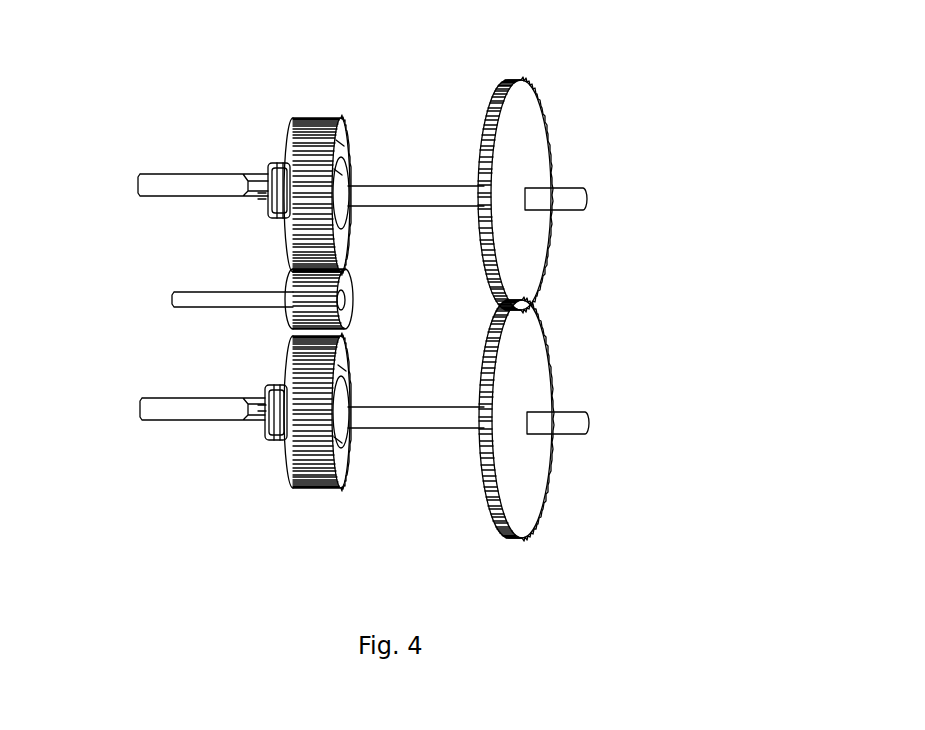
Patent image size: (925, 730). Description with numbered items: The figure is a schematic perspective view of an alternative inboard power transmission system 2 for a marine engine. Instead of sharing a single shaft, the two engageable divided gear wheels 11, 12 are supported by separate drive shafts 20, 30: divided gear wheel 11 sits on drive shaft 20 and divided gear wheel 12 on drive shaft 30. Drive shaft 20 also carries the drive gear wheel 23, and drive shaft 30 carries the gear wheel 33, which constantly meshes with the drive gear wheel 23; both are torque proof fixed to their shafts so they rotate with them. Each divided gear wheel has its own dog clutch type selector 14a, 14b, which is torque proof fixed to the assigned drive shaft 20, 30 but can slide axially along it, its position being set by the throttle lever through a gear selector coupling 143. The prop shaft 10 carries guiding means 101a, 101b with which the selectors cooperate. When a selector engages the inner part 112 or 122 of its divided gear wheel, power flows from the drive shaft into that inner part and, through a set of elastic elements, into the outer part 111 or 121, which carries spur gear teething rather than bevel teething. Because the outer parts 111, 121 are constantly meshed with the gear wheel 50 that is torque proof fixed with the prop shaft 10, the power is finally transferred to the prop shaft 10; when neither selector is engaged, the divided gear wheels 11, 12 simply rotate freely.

The gear transmission assembly 2 is at (110, 39).
The prop shaft 10 is at (213, 295).
The first divided gear wheel 11 is at (290, 118).
The second divided gear wheel 12 is at (312, 492).
The dog clutch type selector 14a is at (265, 158).
The dog clutch type selector 14b is at (264, 443).
The drive shaft 20 is at (555, 197).
The drive gear wheel 23 is at (528, 127).
The drive shaft 30 is at (563, 425).
The gear wheel 33 is at (528, 476).
The gear wheel 50 is at (340, 282).
The first shaft end 101a is at (263, 197).
The second shaft end 101b is at (273, 409).
The outer part 111 is at (340, 143).
The inner part 112 is at (338, 172).
The outer part 121 is at (342, 368).
The inner part 122 is at (338, 440).
The gear selector coupling 143 is at (262, 182).